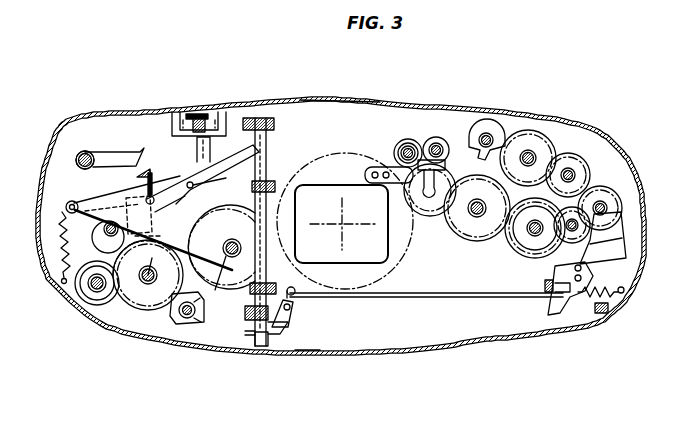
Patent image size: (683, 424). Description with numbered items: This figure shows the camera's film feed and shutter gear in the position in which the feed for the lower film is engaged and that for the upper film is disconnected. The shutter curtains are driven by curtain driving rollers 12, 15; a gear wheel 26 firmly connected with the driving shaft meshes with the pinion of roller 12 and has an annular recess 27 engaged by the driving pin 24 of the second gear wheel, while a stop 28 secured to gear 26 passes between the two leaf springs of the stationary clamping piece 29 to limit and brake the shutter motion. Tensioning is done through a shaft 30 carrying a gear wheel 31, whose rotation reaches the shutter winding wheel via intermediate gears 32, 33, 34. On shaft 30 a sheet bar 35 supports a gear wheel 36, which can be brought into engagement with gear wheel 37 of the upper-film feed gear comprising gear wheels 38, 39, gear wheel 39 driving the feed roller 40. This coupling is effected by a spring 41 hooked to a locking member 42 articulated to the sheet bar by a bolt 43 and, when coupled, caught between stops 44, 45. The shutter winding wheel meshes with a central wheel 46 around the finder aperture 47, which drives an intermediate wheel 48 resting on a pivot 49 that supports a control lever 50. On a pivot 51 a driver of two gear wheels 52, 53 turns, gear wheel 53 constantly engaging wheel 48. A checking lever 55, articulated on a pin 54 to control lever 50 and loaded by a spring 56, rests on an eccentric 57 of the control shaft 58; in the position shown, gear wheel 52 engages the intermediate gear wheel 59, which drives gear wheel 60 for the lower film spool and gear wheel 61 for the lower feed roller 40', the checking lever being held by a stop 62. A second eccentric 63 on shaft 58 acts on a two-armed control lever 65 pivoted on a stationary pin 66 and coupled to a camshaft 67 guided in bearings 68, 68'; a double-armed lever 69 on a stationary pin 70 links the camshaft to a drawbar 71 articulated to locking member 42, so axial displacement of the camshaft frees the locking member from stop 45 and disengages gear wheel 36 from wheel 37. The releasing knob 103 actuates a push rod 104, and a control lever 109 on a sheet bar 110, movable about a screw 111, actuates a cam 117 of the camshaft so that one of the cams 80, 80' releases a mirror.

The curtain driving roller 12 is at (405, 141).
The curtain driving roller 15 is at (440, 140).
The driving pin 24 is at (421, 150).
The gear wheel 26 is at (425, 218).
The annular recess 27 is at (451, 180).
The stop 28 is at (433, 139).
The clamping piece 29 is at (374, 167).
The shaft 30 is at (582, 188).
The gear wheel 31 is at (575, 208).
The intermediate gear 32 is at (536, 238).
The intermediate gear 33 is at (522, 254).
The intermediate gear 34 is at (466, 230).
The sheet bar 35 is at (602, 232).
The gear wheel 36 is at (604, 202).
The gear wheel 37 is at (557, 152).
The gear wheel 38 is at (518, 138).
The gear wheel 39 is at (492, 124).
The feed roller 40 is at (487, 118).
The feed roller 40' is at (193, 342).
The spring 41 is at (622, 294).
The locking member 42 is at (569, 306).
The bolt 43 is at (582, 270).
The stop 44 is at (604, 318).
The stop 45 is at (551, 304).
The central wheel 46 is at (392, 272).
The finder aperture 47 is at (348, 268).
The intermediate wheel 48 is at (262, 340).
The pivot 49 is at (236, 259).
The control lever 50 is at (210, 252).
The pivot 51 is at (140, 252).
The gear wheel 52 is at (118, 248).
The gear wheel 53 is at (152, 262).
The pin 54 is at (152, 196).
The checking lever 55 is at (134, 214).
The spring 56 is at (61, 205).
The eccentric 57 is at (95, 288).
The control shaft 58 is at (109, 234).
The intermediate gear wheel 59 is at (141, 300).
The gear wheel 60 is at (78, 292).
The gear wheel 61 is at (178, 326).
The stop 62 is at (148, 172).
The eccentric 63 is at (115, 212).
The control lever 65 is at (180, 185).
The pin 66 is at (216, 180).
The camshaft 67 is at (270, 162).
The bearing 68 is at (280, 211).
The bearing 68' is at (276, 339).
The double-armed lever 69 is at (294, 299).
The pin 70 is at (280, 326).
The drawbar 71 is at (425, 298).
The cam 80 is at (264, 103).
The cam 80' is at (300, 316).
The releasing knob 103 is at (198, 110).
The push rod 104 is at (214, 137).
The control lever 109 is at (133, 151).
The sheet bar 110 is at (335, 133).
The screw 111 is at (80, 152).
The cam 117 is at (307, 352).